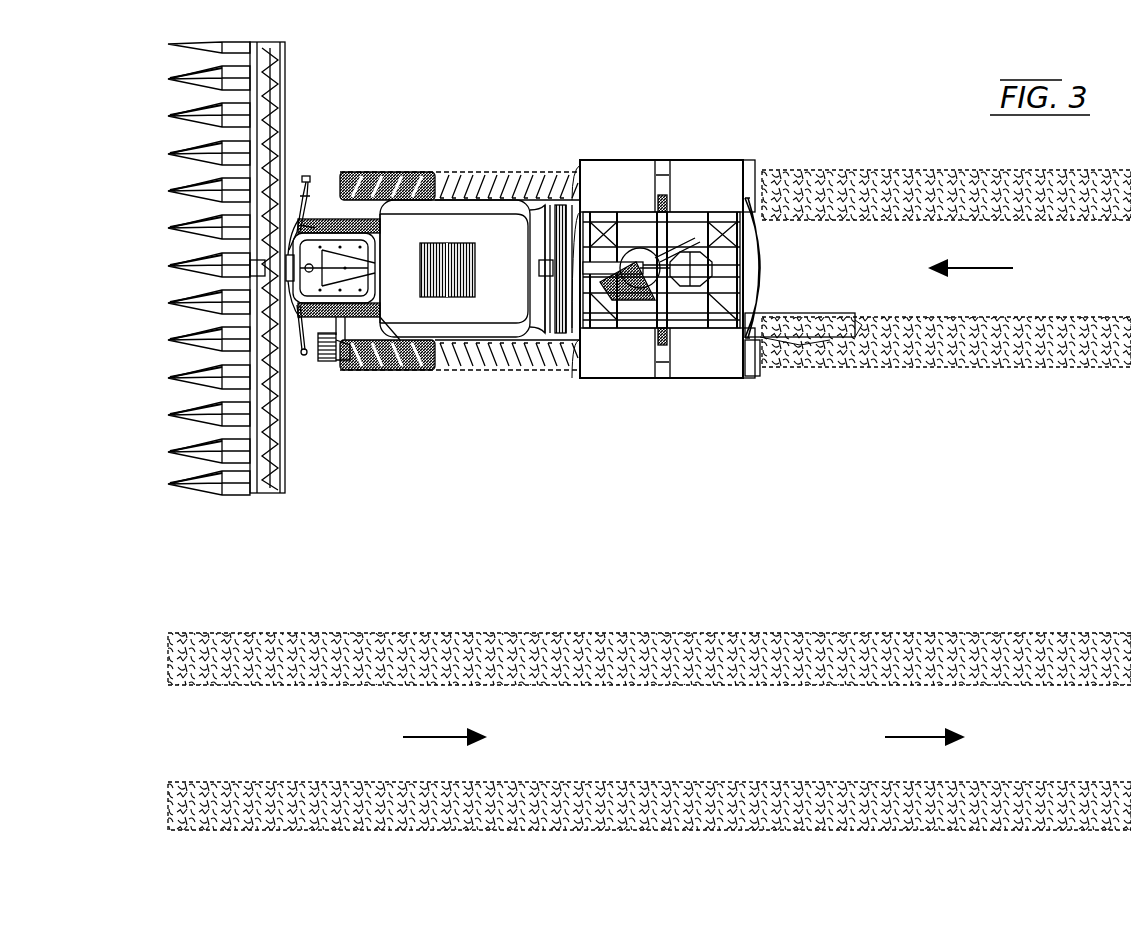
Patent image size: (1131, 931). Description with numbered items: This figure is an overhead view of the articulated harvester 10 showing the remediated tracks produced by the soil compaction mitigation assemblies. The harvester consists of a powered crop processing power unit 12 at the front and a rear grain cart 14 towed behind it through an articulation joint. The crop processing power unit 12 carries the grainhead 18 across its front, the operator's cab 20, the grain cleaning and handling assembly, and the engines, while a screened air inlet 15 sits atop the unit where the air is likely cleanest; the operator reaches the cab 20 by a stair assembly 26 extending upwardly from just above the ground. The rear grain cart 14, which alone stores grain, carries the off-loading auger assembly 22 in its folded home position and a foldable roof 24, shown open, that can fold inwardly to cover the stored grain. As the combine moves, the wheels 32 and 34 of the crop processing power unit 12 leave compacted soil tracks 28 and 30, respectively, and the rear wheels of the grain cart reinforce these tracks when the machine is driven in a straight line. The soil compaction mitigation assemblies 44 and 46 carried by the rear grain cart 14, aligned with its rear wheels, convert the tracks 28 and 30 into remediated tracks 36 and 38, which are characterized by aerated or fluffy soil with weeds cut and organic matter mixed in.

The articulated harvester 10 is at (462, 111).
The crop processing power unit 12 is at (386, 128).
The rear grain cart 14 is at (762, 141).
The screened air inlet 15 is at (474, 268).
The grainhead 18 is at (286, 90).
The operator's cab 20 is at (333, 220).
The off-loading auger assembly 22 is at (789, 320).
The foldable roof 24 is at (616, 180).
The stair assembly 26 is at (330, 362).
The track 28 is at (491, 172).
The track 30 is at (500, 371).
The wheel 32 is at (382, 173).
The wheel 34 is at (396, 366).
The remediated track 36 is at (942, 178).
The remediated track 38 is at (960, 366).
The soil compaction mitigation assembly 44 is at (752, 186).
The soil compaction mitigation assembly 46 is at (764, 368).